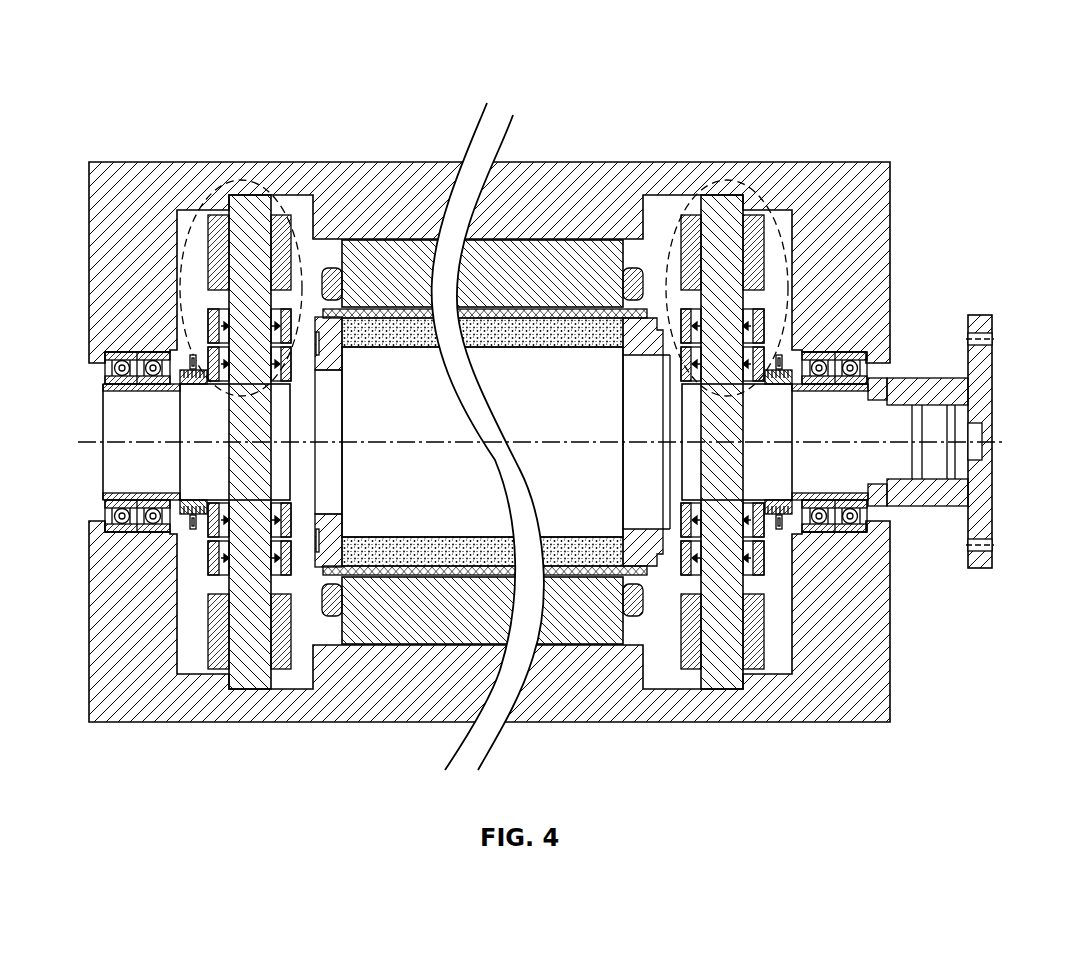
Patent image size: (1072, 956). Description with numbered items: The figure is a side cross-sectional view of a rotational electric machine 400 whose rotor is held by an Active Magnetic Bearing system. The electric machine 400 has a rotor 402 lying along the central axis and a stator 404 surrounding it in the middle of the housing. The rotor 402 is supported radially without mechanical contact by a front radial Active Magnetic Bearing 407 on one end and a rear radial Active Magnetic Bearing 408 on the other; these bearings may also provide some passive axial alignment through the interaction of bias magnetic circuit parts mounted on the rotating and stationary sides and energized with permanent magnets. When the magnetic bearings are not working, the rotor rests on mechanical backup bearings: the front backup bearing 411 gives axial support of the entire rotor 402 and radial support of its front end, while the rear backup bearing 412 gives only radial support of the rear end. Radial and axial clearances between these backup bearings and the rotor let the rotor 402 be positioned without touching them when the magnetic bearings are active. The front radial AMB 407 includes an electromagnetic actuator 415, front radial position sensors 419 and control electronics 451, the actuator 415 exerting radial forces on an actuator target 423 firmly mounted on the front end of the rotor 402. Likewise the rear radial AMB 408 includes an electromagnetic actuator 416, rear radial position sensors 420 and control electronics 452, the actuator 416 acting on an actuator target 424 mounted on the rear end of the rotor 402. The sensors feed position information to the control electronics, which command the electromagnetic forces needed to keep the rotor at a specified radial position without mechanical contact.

The electric machine 400 is at (130, 76).
The rotor 402 is at (355, 328).
The stator 404 is at (522, 263).
The front radial Active Magnetic Bearing 407 is at (713, 183).
The rear radial Active Magnetic Bearing 408 is at (243, 186).
The front backup bearing 411 is at (850, 355).
The rear backup bearing 412 is at (120, 355).
The electromagnetic actuator 415 is at (738, 203).
The electromagnetic actuator 416 is at (280, 212).
The front radial position sensors 419 is at (783, 352).
The rear radial position sensors 420 is at (193, 358).
The actuator target 423 is at (727, 372).
The actuator target 424 is at (244, 380).
The control electronics 451 is at (718, 688).
The control electronics 452 is at (249, 688).